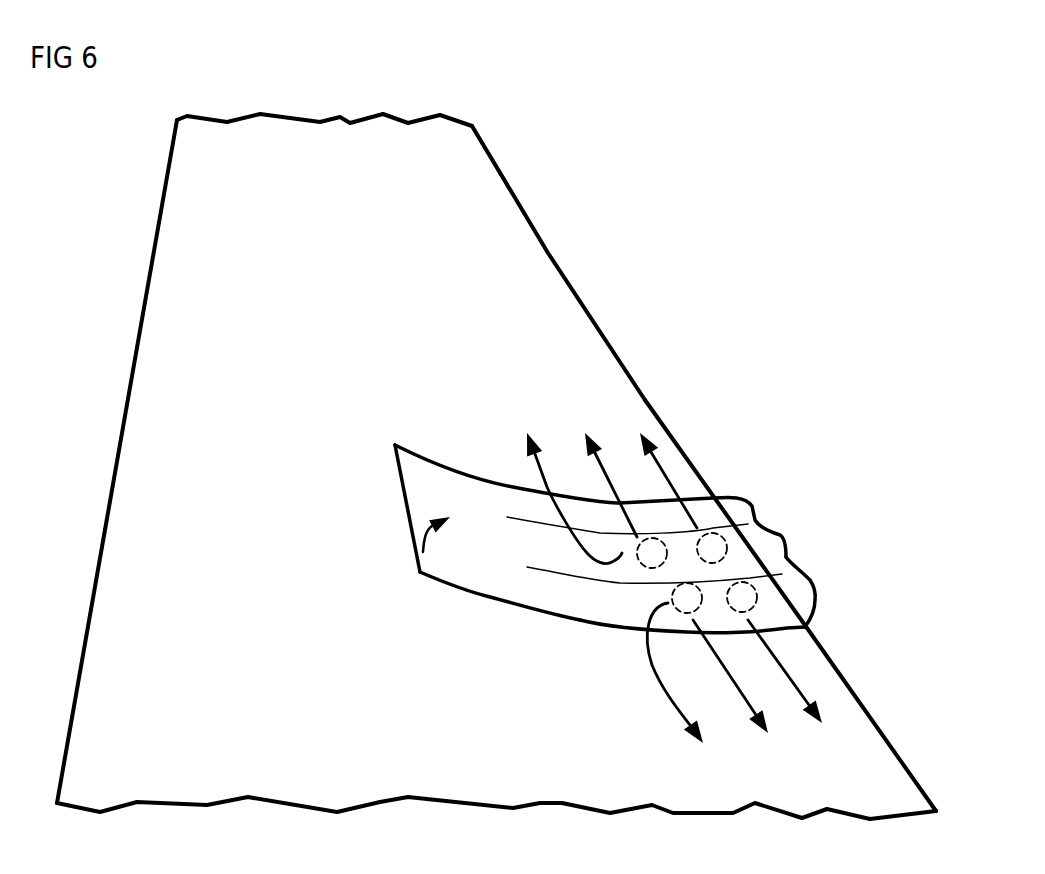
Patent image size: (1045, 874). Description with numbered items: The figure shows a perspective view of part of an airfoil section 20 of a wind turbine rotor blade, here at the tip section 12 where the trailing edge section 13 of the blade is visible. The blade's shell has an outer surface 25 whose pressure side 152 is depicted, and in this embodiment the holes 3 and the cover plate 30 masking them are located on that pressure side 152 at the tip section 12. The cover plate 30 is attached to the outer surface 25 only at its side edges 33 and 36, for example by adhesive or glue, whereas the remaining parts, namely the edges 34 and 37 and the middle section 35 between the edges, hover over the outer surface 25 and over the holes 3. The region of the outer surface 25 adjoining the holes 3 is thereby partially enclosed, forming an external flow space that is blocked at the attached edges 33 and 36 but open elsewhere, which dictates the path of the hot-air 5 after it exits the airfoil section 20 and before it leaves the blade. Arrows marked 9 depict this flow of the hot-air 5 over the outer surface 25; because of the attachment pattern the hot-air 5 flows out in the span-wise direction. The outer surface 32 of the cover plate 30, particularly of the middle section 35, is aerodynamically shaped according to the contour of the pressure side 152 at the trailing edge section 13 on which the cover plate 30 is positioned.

The airfoil section 20 is at (79, 183).
The tip section 12 is at (98, 470).
The trailing edge section 13 is at (870, 745).
The outer surface 25 is at (473, 255).
The pressure side 152 is at (582, 328).
The cover plate 30 is at (381, 431).
The outer surface of the cover plate 32 is at (416, 552).
The edge of the cover plate 33 is at (406, 502).
The edge of the cover plate 34 is at (502, 485).
The middle section of the cover plate 35 is at (508, 594).
The edge of the cover plate 36 is at (810, 577).
The edge of the cover plate 37 is at (579, 629).
The holes 3 is at (727, 545).
The flow of the hot-air 9 is at (663, 478).
The hot-air 5 is at (684, 720).